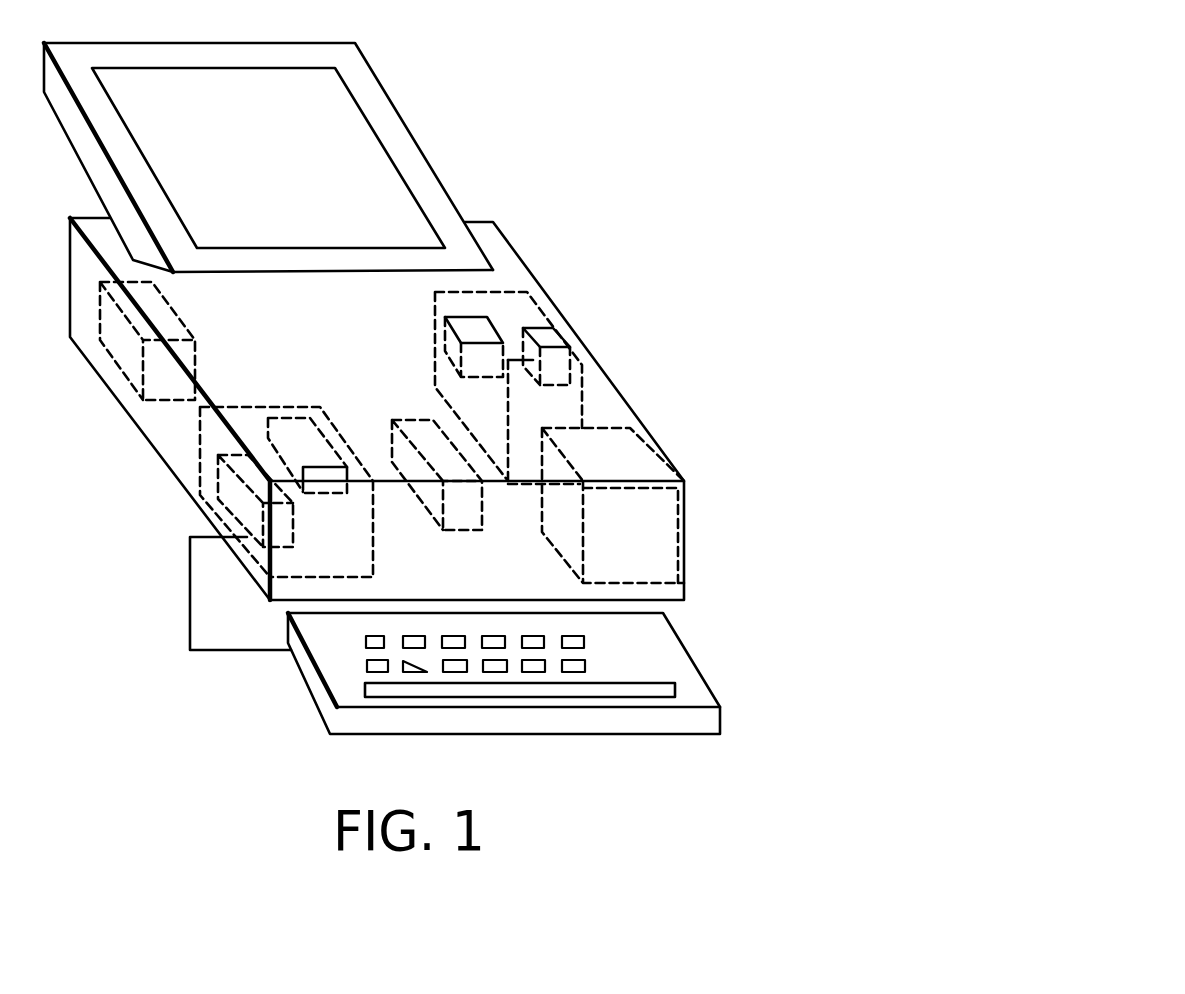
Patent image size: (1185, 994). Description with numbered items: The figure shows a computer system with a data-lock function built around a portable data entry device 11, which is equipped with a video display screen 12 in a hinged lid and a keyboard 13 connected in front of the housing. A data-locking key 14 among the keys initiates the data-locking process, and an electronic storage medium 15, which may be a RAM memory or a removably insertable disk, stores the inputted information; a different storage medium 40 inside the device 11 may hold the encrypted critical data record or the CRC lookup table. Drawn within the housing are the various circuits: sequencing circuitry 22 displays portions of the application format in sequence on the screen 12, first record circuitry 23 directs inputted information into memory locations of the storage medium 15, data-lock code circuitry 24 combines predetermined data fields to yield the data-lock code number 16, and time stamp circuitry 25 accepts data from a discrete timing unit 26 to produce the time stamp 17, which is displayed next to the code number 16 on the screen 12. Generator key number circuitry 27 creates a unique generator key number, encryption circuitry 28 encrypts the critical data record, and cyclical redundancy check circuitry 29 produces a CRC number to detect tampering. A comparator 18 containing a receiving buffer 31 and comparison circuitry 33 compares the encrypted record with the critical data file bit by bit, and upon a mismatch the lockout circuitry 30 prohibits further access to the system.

The portable data entry device 11 is at (515, 248).
The video display screen 12 is at (343, 125).
The keyboard 13 is at (692, 652).
The data-locking key 14 is at (366, 641).
The electronic storage medium 15 is at (350, 540).
The data-lock code number 16 is at (275, 416).
The time stamp 17 is at (287, 417).
The comparator 18 is at (568, 397).
The sequencing circuitry 22 is at (850, 505).
The first record circuitry 23 is at (228, 490).
The data-lock code circuitry 24 is at (850, 505).
The time stamp circuitry 25 is at (850, 505).
The discrete timing unit 26 is at (192, 357).
The generator key number circuitry 27 is at (850, 505).
The encryption circuitry 28 is at (850, 505).
The cyclical redundancy check circuitry 29 is at (850, 505).
The lockout circuitry 30 is at (650, 531).
The receiving buffer 31 is at (552, 327).
The comparison circuitry 33 is at (462, 372).
The storage medium 40 is at (422, 425).